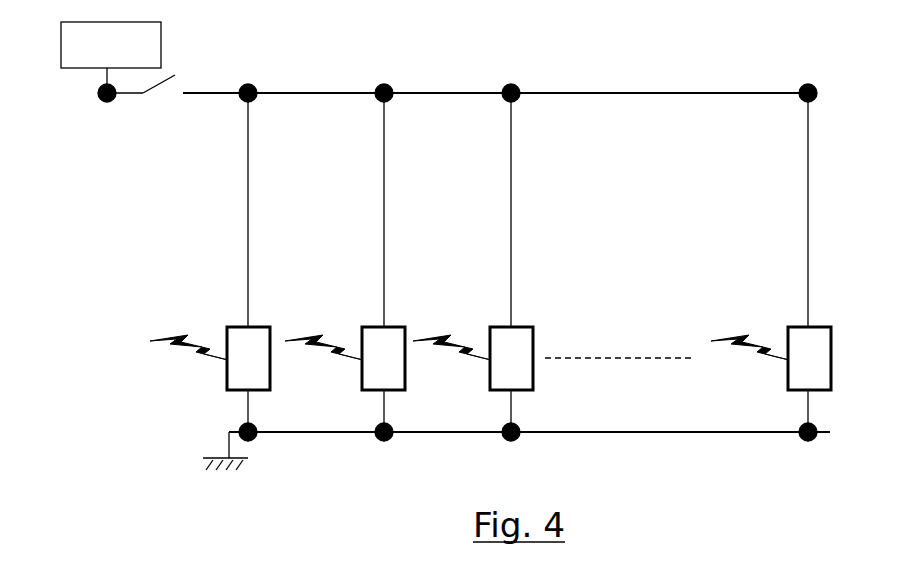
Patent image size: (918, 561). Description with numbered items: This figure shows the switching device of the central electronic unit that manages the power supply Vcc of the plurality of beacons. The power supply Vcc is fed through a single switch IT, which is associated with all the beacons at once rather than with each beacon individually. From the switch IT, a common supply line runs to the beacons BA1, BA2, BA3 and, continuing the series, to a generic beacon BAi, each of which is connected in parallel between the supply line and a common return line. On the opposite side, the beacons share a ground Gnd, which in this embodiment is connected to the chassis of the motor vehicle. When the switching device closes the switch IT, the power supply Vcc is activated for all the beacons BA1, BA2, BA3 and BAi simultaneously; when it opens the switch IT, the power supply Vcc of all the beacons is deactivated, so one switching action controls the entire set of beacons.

The power supply Vcc is at (111, 62).
The switch IT is at (142, 105).
The beacon BA1 is at (210, 262).
The beacon BA2 is at (345, 262).
The beacon BA3 is at (473, 262).
The beacon BAi is at (771, 262).
The ground Gnd is at (221, 467).